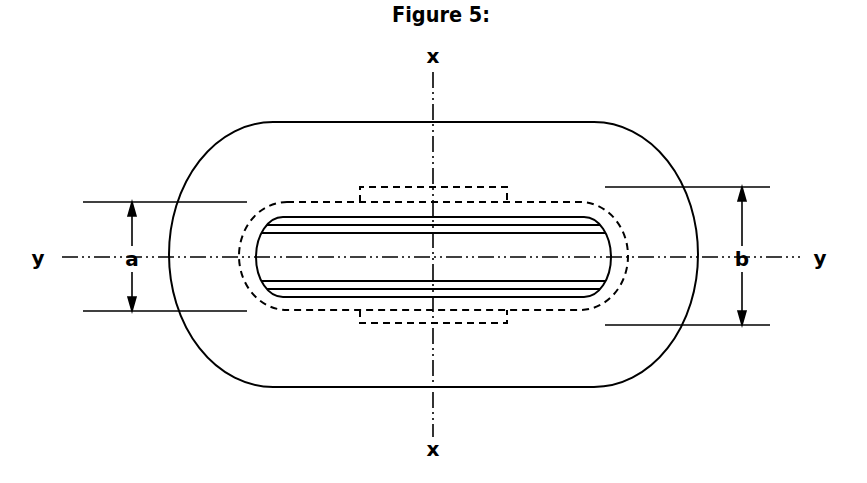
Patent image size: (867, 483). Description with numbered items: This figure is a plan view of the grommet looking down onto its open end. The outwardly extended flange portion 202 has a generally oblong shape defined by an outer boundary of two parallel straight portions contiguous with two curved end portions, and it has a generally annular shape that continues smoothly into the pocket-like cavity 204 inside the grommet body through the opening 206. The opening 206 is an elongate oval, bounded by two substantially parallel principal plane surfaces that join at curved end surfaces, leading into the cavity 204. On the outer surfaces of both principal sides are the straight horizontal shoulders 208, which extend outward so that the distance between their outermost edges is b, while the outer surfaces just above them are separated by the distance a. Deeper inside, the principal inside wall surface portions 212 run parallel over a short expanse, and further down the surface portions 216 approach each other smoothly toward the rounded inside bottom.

The flange portion 202 is at (562, 153).
The pocket-like cavity 204 is at (342, 257).
The opening 206 is at (612, 259).
The shoulder 208 is at (463, 193).
The principal inside wall surface portion 212 is at (337, 222).
The surface portion 216 is at (535, 232).